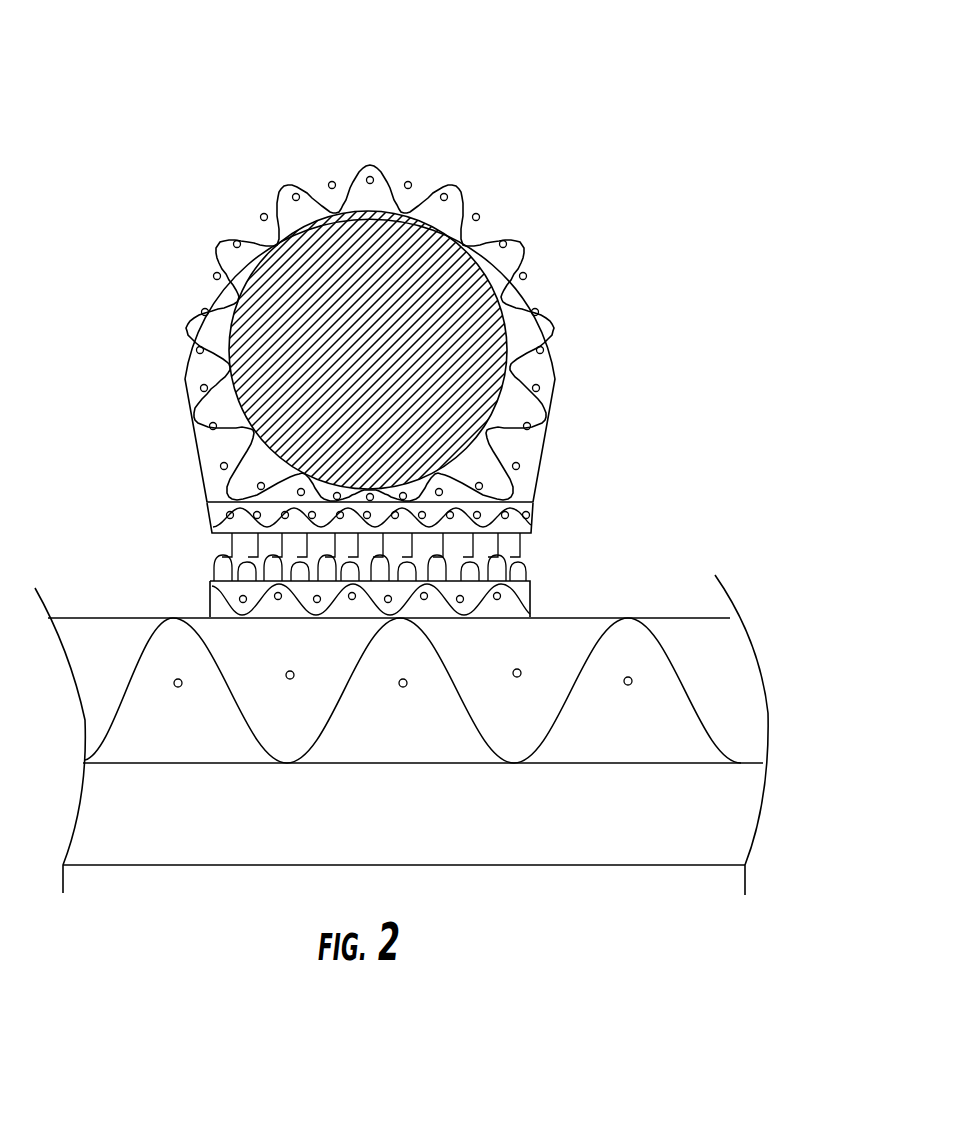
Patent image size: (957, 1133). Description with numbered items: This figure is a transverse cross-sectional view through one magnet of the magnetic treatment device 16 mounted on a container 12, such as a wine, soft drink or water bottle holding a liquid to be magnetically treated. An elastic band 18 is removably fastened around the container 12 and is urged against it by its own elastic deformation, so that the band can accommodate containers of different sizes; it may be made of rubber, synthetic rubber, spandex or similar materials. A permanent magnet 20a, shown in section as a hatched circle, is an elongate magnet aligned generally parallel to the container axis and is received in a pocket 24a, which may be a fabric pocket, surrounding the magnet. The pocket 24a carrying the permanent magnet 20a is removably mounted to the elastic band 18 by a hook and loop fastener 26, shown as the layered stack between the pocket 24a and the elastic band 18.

The magnetic treatment device 16 is at (538, 118).
The pocket 24a is at (513, 230).
The permanent magnet 20a is at (500, 287).
The hook and loop fastener 26 is at (562, 617).
The elastic band 18 is at (717, 763).
The container 12 is at (220, 866).